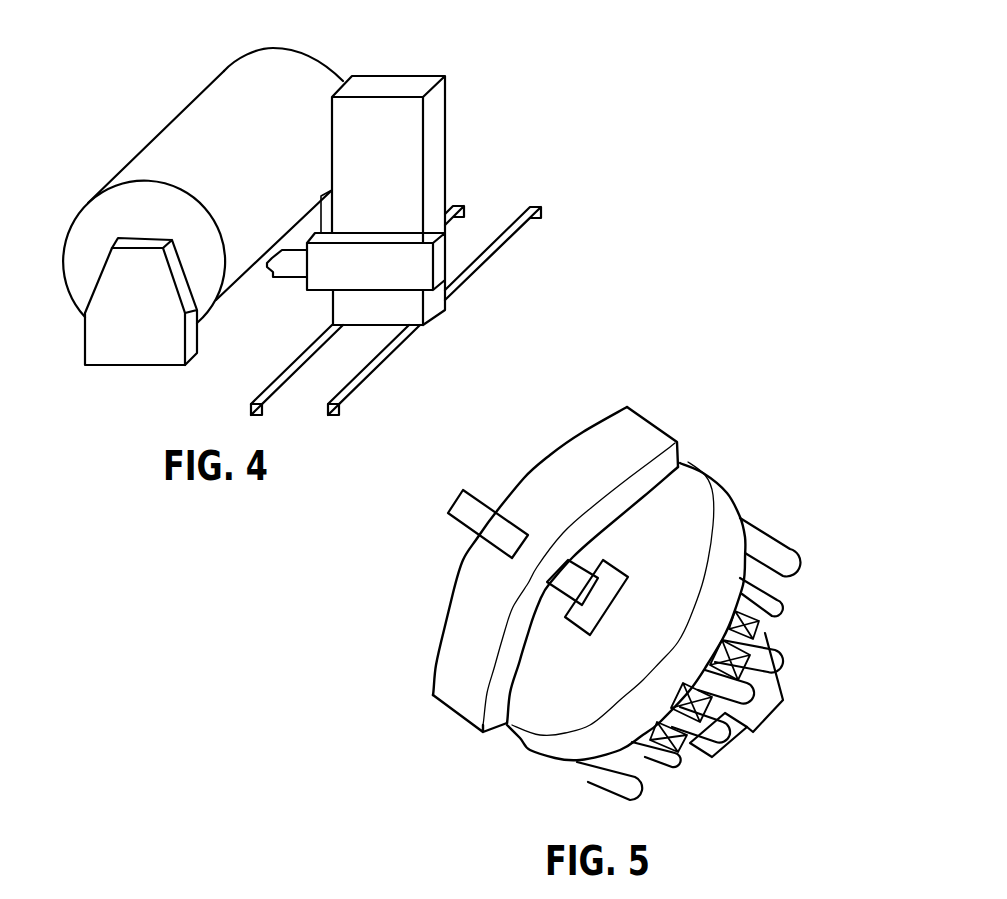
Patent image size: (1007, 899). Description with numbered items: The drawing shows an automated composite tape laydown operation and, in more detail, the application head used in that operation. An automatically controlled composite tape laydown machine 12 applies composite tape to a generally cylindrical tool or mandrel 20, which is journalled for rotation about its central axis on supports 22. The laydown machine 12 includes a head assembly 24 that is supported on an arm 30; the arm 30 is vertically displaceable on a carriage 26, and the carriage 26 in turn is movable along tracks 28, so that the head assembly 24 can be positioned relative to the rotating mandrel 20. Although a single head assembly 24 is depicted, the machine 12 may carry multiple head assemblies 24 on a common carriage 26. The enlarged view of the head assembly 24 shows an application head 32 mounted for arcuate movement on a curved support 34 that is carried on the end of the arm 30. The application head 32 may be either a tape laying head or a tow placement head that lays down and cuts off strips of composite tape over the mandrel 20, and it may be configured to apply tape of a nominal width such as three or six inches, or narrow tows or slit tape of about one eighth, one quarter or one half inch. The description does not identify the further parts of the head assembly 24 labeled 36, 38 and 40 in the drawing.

In FIG. 4, the composite tape laydown machine 12 is at (467, 78).
In FIG. 4, the mandrel 20 is at (172, 155).
In FIG. 4, the supports 22 is at (117, 339).
In FIG. 4, the head assembly 24 is at (283, 268).
In FIG. 5, the head assembly 24 is at (788, 456).
In FIG. 4, the carriage 26 is at (431, 163).
In FIG. 4, the tracks 28 is at (498, 253).
In FIG. 4, the arm 30 is at (418, 262).
In FIG. 5, the arm 30 is at (505, 535).
In FIG. 5, the application head 32 is at (683, 513).
In FIG. 5, the curved support 34 is at (558, 488).
In FIG. 5, the contact pin 36 is at (776, 559).
In FIG. 5, the contact pin 38 is at (778, 605).
In FIG. 5, the spring contact 40 is at (768, 678).